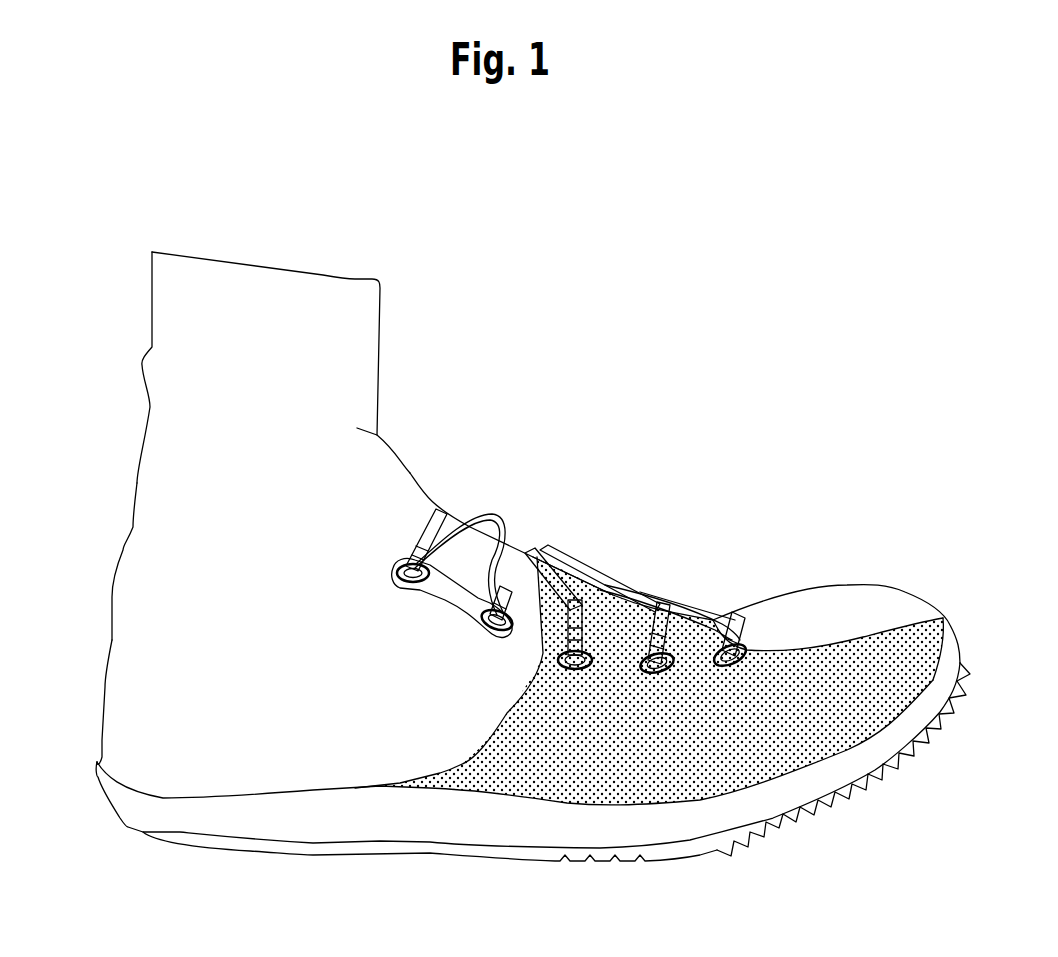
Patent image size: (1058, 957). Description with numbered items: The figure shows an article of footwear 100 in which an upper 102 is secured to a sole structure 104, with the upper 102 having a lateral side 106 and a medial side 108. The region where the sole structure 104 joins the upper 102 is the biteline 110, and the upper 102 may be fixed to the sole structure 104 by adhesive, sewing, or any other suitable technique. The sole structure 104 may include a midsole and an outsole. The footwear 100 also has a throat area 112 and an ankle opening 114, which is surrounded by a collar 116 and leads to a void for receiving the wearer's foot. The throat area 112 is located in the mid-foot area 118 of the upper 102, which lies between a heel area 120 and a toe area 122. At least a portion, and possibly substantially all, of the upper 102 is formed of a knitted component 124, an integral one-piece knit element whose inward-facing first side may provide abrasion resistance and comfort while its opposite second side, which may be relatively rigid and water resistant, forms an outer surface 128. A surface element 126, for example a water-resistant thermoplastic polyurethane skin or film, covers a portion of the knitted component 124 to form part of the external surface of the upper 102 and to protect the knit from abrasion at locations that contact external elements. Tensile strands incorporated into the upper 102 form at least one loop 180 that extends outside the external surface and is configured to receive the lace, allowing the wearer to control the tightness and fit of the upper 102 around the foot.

The article of footwear 100 is at (609, 524).
The upper 102 is at (798, 608).
The sole structure 104 is at (812, 785).
The lateral side 106 is at (403, 738).
The medial side 108 is at (567, 577).
The biteline 110 is at (757, 785).
The throat area 112 is at (578, 587).
The ankle opening 114 is at (208, 262).
The collar 116 is at (352, 285).
The mid-foot area 118 is at (480, 718).
The heel area 120 is at (137, 683).
The toe area 122 is at (907, 603).
The knitted component 124 is at (155, 615).
The surface element 126 is at (653, 767).
The outer surface 128 is at (428, 692).
The loop 180 is at (410, 562).